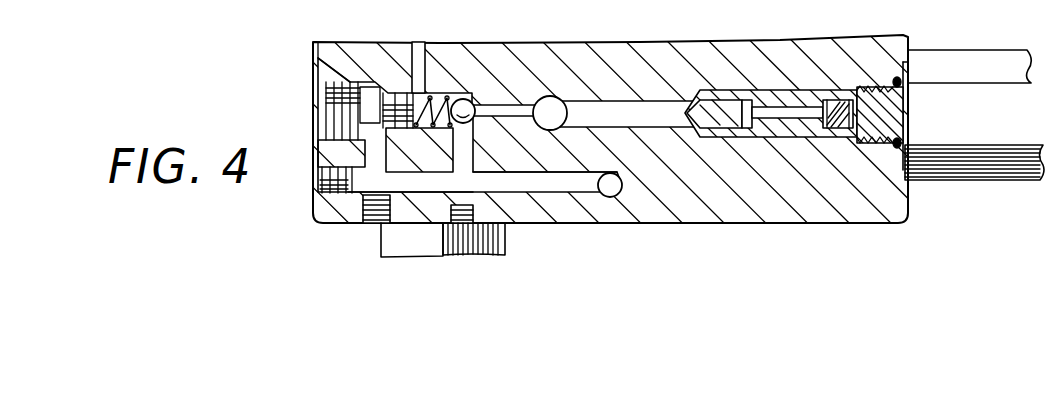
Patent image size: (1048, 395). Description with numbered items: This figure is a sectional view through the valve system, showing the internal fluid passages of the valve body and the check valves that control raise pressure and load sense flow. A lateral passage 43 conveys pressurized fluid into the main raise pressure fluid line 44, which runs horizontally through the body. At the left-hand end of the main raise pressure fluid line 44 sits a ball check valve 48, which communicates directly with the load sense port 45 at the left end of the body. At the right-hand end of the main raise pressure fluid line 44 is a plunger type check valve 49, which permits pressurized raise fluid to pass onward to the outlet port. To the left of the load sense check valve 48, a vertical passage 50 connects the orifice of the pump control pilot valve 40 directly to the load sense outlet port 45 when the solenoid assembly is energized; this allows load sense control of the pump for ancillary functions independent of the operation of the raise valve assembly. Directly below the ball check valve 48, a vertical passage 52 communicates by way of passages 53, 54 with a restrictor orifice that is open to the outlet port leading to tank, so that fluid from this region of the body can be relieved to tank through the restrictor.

The pump control pilot valve 40 is at (822, 243).
The lateral passage 43 is at (550, 95).
The main raise pressure fluid line 44 is at (630, 106).
The load sense port 45 is at (313, 101).
The ball check valve 48 is at (465, 98).
The plunger type check valve 49 is at (793, 97).
The vertical passage 50 is at (417, 49).
The vertical passage 52 is at (513, 232).
The passage 53 is at (563, 185).
The passage 54 is at (613, 196).